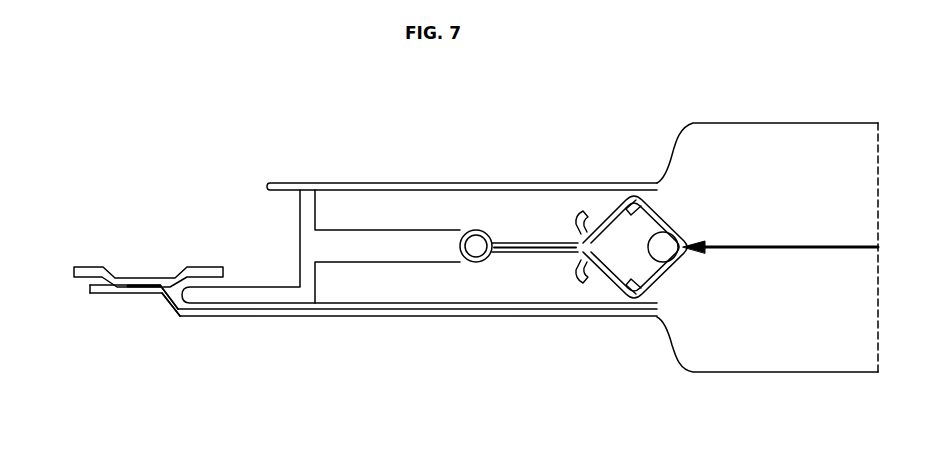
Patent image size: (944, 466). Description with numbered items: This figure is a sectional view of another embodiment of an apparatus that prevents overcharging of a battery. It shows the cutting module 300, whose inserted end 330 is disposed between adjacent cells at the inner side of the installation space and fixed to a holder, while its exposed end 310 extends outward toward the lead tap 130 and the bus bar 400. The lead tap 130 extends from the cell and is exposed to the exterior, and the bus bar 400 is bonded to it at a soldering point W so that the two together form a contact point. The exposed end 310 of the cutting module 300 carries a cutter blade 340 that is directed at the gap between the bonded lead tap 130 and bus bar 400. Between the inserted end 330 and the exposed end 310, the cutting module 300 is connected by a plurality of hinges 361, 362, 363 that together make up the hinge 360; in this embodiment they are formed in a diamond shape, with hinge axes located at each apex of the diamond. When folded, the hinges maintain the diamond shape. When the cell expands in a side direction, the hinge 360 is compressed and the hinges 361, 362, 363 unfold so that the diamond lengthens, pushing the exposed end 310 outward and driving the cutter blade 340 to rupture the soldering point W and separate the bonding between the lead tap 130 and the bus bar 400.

The cutting module 300 is at (383, 285).
The exposed end 310 is at (254, 293).
The hinge 360 is at (578, 327).
The lead tap 130 is at (92, 293).
The cutter blade 340 is at (170, 307).
The bus bar 400 is at (83, 265).
The soldering point W is at (143, 283).
The hinge 361 is at (538, 240).
The hinge 362 is at (617, 208).
The hinge 363 is at (660, 213).
The inserted end 330 is at (668, 249).